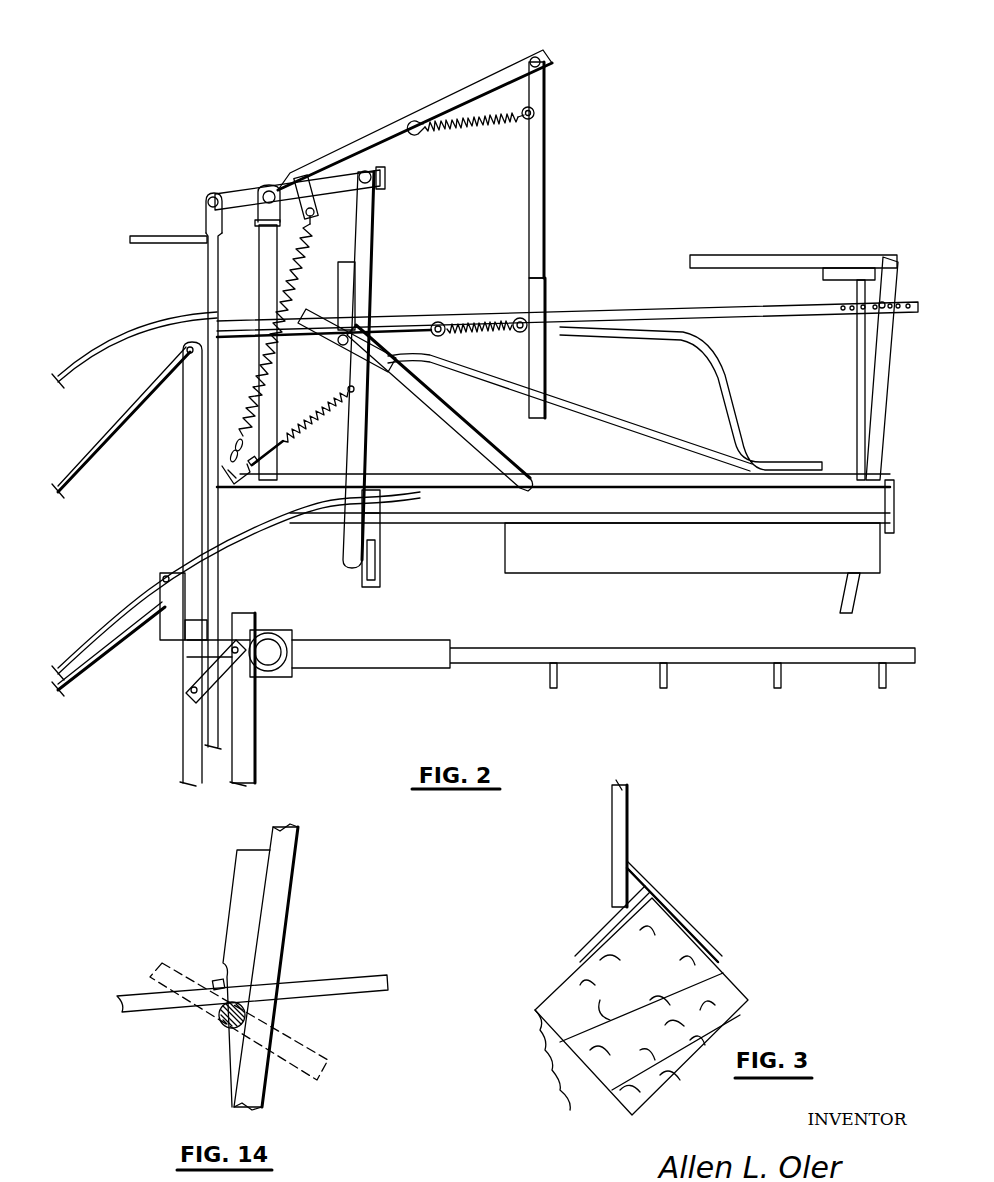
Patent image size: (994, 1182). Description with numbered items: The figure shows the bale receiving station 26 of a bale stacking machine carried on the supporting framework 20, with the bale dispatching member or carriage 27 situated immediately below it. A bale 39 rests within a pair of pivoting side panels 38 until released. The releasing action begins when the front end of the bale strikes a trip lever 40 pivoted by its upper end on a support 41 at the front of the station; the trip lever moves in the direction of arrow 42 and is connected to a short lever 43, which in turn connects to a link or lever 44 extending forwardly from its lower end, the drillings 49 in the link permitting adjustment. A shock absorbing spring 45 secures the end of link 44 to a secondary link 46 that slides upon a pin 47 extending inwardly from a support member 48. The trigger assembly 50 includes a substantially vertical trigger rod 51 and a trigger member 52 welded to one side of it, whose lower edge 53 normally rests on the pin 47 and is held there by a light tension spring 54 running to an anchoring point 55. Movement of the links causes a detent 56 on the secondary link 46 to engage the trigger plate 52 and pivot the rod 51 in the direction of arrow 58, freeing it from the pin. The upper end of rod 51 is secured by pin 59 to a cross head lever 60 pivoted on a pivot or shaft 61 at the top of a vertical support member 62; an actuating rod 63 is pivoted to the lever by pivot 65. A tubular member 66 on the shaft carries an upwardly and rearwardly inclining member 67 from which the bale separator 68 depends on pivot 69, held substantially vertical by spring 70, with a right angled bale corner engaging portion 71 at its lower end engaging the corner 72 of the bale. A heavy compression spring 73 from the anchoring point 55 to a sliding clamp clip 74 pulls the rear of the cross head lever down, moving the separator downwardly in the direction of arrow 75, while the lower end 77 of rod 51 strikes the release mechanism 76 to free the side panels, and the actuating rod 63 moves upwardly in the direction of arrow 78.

In FIG. 2, the supporting framework 20 is at (256, 716).
In FIG. 2, the bale receiving station 26 is at (666, 398).
In FIG. 2, the bale dispatching member or carriage 27 is at (510, 674).
In FIG. 2, the pivoting side panels 38 is at (623, 570).
In FIG. 3, the bale 39 is at (557, 991).
In FIG. 2, the trip lever 40 is at (856, 603).
In FIG. 2, the support 41 is at (826, 257).
In FIG. 2, the arrow 42 is at (832, 628).
In FIG. 2, the short lever 43 is at (857, 287).
In FIG. 2, the link or lever 44 is at (600, 319).
In FIG. 2, the shock absorbing spring 45 is at (472, 322).
In FIG. 2, the secondary link 46 is at (396, 327).
In FIG. 2, the pin 47 is at (340, 348).
In FIG. 14, the pin 47 is at (225, 1027).
In FIG. 2, the support member 48 is at (309, 312).
In FIG. 14, the support member 48 is at (306, 1046).
In FIG. 2, the drillings 49 is at (846, 313).
In FIG. 2, the trigger assembly 50 is at (398, 204).
In FIG. 2, the trigger rod 51 is at (366, 441).
In FIG. 14, the trigger rod 51 is at (268, 1083).
In FIG. 2, the trigger member or trigger plate 52 is at (352, 292).
In FIG. 14, the trigger member or trigger plate 52 is at (255, 921).
In FIG. 14, the lower edge 53 is at (262, 997).
In FIG. 2, the tension spring 54 is at (290, 424).
In FIG. 2, the anchoring point 55 is at (236, 484).
In FIG. 14, the detent 56 is at (217, 980).
In FIG. 2, the arrow 58 is at (330, 600).
In FIG. 2, the pin 59 is at (384, 178).
In FIG. 2, the cross head lever 60 is at (236, 192).
In FIG. 2, the pivot or shaft 61 is at (274, 190).
In FIG. 2, the vertical support member 62 is at (266, 257).
In FIG. 2, the actuating rod 63 is at (207, 283).
In FIG. 2, the pivot 65 is at (209, 195).
In FIG. 2, the tubular member 66 is at (262, 205).
In FIG. 2, the upwardly and rearwardly inclining member 67 is at (436, 114).
In FIG. 2, the bale separator 68 is at (546, 192).
In FIG. 3, the bale separator 68 is at (629, 823).
In FIG. 2, the pivot 69 is at (535, 57).
In FIG. 2, the spring 70 is at (532, 109).
In FIG. 2, the right angled bale corner engaging portion 71 is at (546, 370).
In FIG. 3, the right angled bale corner engaging portion 71 is at (641, 882).
In FIG. 3, the corner 72 is at (661, 913).
In FIG. 2, the compression spring 73 is at (270, 346).
In FIG. 2, the sliding clamp clip 74 is at (316, 207).
In FIG. 2, the arrow 75 is at (557, 225).
In FIG. 2, the release mechanism 76 is at (380, 578).
In FIG. 2, the lower end 77 is at (345, 548).
In FIG. 2, the arrow 78 is at (102, 285).